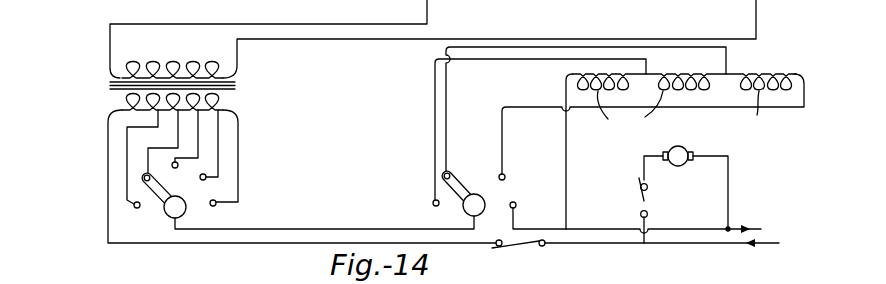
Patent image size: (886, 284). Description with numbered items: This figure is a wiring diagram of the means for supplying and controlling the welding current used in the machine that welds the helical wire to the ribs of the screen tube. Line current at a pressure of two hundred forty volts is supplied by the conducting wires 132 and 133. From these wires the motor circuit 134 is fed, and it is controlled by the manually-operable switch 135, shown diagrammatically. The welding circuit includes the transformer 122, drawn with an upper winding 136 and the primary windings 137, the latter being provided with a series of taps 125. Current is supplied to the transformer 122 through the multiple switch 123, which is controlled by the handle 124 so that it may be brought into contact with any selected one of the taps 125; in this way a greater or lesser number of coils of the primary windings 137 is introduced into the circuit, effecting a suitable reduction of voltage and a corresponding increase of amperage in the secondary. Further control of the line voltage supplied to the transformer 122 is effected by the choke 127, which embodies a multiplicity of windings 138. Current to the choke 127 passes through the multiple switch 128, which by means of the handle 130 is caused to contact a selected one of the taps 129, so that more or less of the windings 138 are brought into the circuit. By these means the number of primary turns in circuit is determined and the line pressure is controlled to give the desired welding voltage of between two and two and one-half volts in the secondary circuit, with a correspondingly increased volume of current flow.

The transformer 122 is at (127, 43).
The multiple switch 123 is at (155, 193).
The handle 124 is at (187, 210).
The taps 125 is at (134, 206).
The choke 127 is at (757, 67).
The multiple switch 128 is at (452, 171).
The taps 129 is at (432, 203).
The handle 130 is at (477, 196).
The conducting wire 132 is at (699, 244).
The conducting wire 133 is at (762, 228).
The motor circuit 134 is at (729, 186).
The manually-operable switch 135 is at (645, 201).
The primary winding 136 is at (155, 60).
The transformer primary windings 137 is at (220, 100).
The windings 138 is at (692, 112).